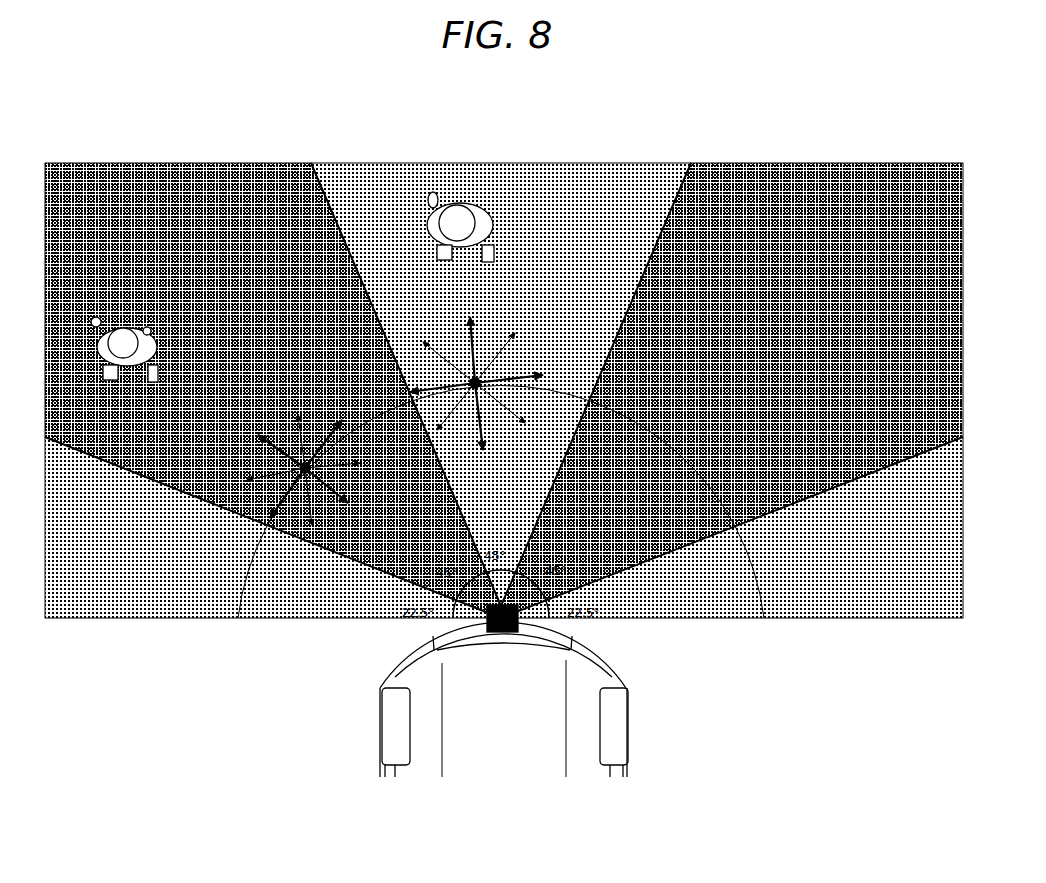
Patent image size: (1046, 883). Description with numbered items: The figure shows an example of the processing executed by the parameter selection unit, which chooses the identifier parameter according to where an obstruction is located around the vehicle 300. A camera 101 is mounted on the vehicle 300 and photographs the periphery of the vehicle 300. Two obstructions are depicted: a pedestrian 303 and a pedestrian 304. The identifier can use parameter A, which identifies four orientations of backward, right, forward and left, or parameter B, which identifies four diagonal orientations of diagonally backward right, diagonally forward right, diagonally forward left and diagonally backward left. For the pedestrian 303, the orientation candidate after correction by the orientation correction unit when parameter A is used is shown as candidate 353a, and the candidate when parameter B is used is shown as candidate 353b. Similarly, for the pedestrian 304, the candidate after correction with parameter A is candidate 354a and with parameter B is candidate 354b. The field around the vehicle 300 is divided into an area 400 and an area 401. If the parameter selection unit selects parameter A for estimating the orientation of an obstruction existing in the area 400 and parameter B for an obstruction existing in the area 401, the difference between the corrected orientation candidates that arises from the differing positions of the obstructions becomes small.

The camera 101 is at (501, 655).
The vehicle 300 is at (541, 699).
The pedestrian 303 is at (536, 390).
The pedestrian 304 is at (144, 332).
The orientation candidate 353a is at (470, 386).
The orientation candidate 353b is at (496, 384).
The orientation candidate 354a is at (288, 472).
The orientation candidate 354b is at (289, 474).
The area 400 is at (504, 398).
The area 401 is at (504, 373).